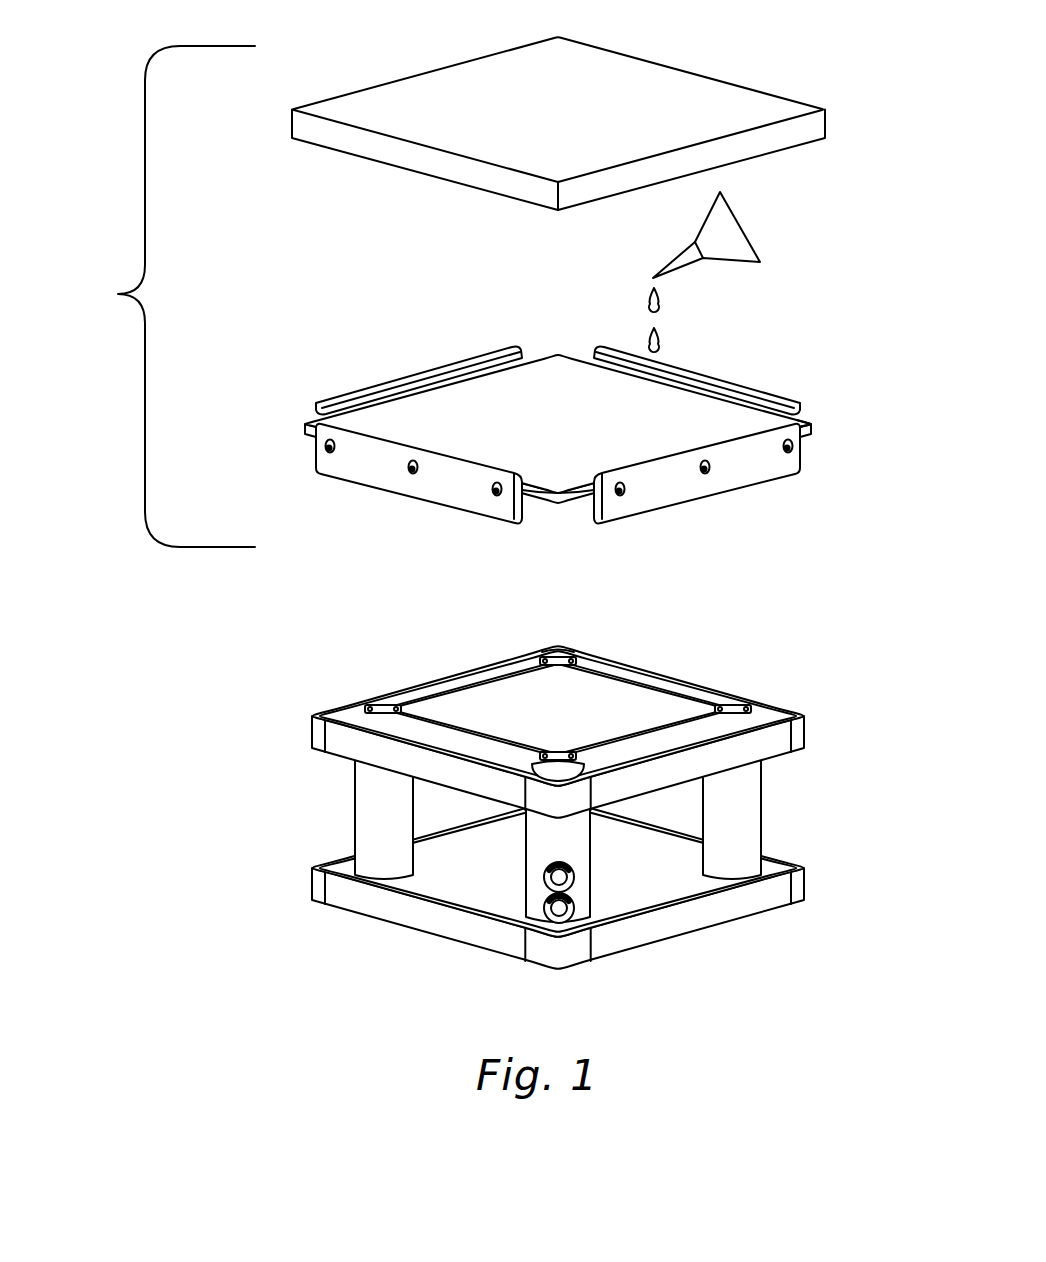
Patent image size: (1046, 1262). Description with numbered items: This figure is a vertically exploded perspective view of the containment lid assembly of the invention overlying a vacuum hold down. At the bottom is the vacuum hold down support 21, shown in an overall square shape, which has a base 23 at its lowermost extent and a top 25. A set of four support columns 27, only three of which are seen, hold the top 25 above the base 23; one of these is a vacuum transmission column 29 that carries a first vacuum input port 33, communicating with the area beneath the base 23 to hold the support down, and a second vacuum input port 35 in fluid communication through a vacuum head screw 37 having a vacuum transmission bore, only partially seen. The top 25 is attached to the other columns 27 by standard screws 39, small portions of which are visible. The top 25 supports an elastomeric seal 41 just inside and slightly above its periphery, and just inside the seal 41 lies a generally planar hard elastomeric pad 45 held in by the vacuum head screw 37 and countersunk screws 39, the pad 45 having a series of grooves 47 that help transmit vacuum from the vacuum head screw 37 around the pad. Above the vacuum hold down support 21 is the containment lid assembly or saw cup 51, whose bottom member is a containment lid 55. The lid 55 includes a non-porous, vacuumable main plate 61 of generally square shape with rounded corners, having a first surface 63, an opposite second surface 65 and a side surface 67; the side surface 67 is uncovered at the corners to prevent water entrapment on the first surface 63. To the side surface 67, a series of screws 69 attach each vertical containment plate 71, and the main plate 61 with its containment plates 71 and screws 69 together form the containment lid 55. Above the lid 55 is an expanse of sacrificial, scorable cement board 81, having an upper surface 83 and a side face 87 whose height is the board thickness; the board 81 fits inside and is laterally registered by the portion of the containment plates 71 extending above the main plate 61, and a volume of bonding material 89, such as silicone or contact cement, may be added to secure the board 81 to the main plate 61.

The vacuum hold down support 21 is at (542, 790).
The base 23 is at (735, 912).
The top 25 is at (614, 704).
The support columns 27 is at (373, 822).
The vacuum transmission column 29 is at (543, 840).
The first vacuum input port 33 is at (575, 906).
The second vacuum input port 35 is at (575, 873).
The vacuum head screw 37 is at (557, 757).
The screws 39 is at (390, 708).
The elastomeric seal 41 is at (797, 703).
The hard elastomeric pad 45 is at (473, 717).
The grooves 47 is at (482, 677).
The saw cup 51 is at (118, 294).
The containment lid 55 is at (575, 439).
The main plate 61 is at (608, 425).
The first surface 63 is at (541, 437).
The second surface 65 is at (563, 512).
The side surface 67 is at (808, 428).
The screws 69 is at (330, 453).
The vertical containment plate 71 is at (450, 362).
The cement board 81 is at (591, 108).
The upper surface 83 is at (546, 127).
The side face 87 is at (843, 107).
The bonding material 89 is at (733, 262).